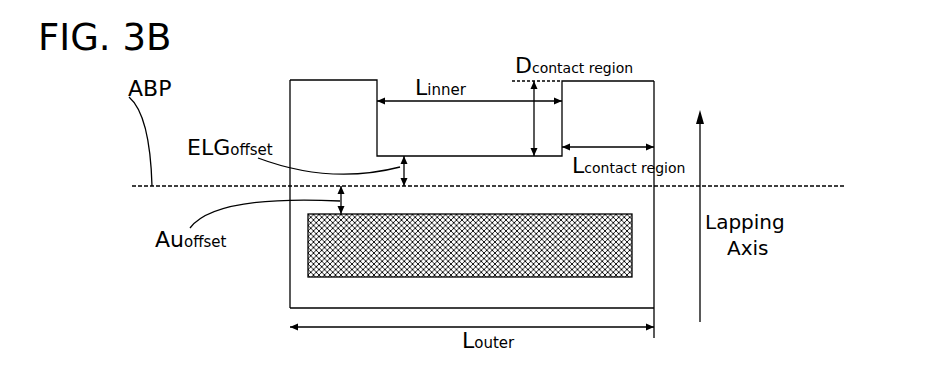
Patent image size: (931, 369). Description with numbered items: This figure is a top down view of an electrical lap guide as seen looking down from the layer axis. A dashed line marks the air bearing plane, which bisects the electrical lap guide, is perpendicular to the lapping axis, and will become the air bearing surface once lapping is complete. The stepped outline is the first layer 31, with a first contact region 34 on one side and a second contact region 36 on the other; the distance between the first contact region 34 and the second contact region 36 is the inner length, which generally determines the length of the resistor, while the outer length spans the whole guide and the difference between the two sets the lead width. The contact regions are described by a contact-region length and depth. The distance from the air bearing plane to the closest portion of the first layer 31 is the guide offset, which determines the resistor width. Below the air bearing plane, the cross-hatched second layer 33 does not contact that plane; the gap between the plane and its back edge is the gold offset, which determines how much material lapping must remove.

The first layer 31 is at (332, 292).
The second layer 33 is at (312, 256).
The first contact region 34 is at (337, 79).
The second contact region 36 is at (655, 82).